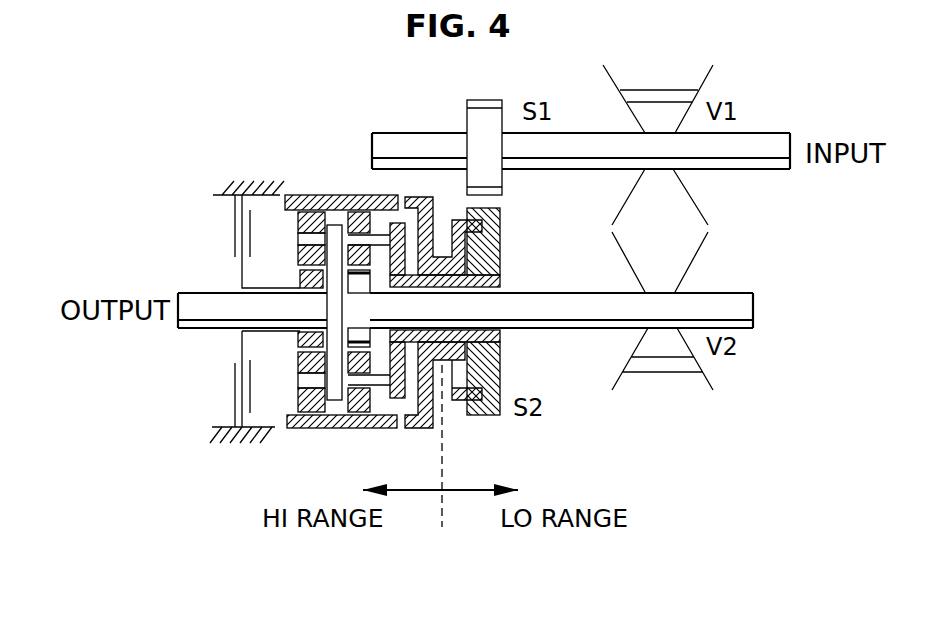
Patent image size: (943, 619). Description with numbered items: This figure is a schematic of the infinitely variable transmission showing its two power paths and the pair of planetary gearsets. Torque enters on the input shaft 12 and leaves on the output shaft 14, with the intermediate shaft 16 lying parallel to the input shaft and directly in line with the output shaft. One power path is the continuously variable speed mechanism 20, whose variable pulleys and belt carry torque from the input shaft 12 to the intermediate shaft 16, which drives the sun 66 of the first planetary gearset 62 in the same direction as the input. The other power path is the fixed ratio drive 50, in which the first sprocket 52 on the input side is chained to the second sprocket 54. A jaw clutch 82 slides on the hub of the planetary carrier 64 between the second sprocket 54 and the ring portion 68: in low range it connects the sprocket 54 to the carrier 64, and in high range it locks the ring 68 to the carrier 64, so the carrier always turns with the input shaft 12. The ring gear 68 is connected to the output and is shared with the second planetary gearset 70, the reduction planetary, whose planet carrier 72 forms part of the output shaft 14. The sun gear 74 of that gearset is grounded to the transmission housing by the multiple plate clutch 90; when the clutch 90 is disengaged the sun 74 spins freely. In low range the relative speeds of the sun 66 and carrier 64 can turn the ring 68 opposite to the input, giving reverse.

The input shaft 12 is at (765, 142).
The output shaft 14 is at (212, 300).
The intermediate shaft 16 is at (733, 298).
The continuously variable speed mechanism 20 is at (679, 410).
The fixed ratio drive 50 is at (490, 435).
The first sprocket 52 is at (482, 112).
The second sprocket 54 is at (495, 358).
The first planetary gearset 62 is at (346, 180).
The planetary carrier portion 64 is at (500, 284).
The sun portion 66 is at (372, 340).
The ring portion 68 is at (330, 195).
The second planetary gearset 70 is at (296, 183).
The planetary carrier portion 72 is at (337, 430).
The sun portion 74 is at (300, 341).
The jaw clutch 82 is at (430, 196).
The second clutch 90 is at (222, 397).